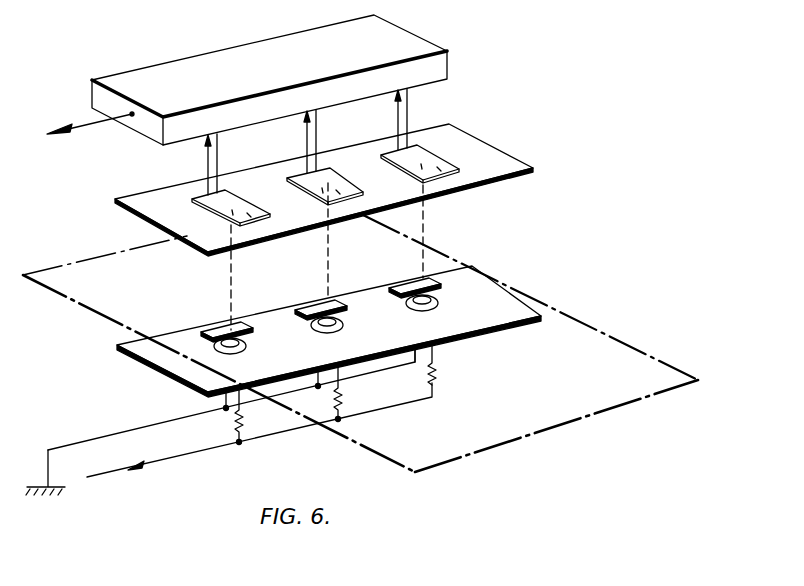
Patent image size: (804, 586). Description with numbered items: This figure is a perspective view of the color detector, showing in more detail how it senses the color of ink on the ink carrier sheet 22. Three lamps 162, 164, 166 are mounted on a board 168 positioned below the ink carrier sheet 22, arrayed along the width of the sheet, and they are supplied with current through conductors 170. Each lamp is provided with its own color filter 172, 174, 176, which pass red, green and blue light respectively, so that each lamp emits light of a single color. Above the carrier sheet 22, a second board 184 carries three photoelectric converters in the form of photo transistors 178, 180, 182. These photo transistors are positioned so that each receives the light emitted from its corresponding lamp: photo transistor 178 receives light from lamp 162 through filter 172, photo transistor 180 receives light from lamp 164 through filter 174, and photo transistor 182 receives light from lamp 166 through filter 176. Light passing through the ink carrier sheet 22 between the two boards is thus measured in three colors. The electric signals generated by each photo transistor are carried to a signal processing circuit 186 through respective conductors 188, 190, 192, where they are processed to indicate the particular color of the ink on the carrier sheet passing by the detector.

The ink carrier sheet 22 is at (647, 350).
The lamp 162 is at (246, 346).
The lamp 164 is at (343, 325).
The lamp 166 is at (438, 303).
The board 168 is at (517, 308).
The conductors 170 is at (101, 438).
The color filter 172 is at (217, 326).
The color filter 174 is at (308, 310).
The color filter 176 is at (440, 282).
The photo transistor 178 is at (217, 211).
The photo transistor 180 is at (340, 188).
The photo transistor 182 is at (445, 172).
The board 184 is at (503, 165).
The signal processing circuit 186 is at (416, 46).
The conductor 188 is at (206, 157).
The conductor 190 is at (305, 139).
The conductor 192 is at (396, 114).